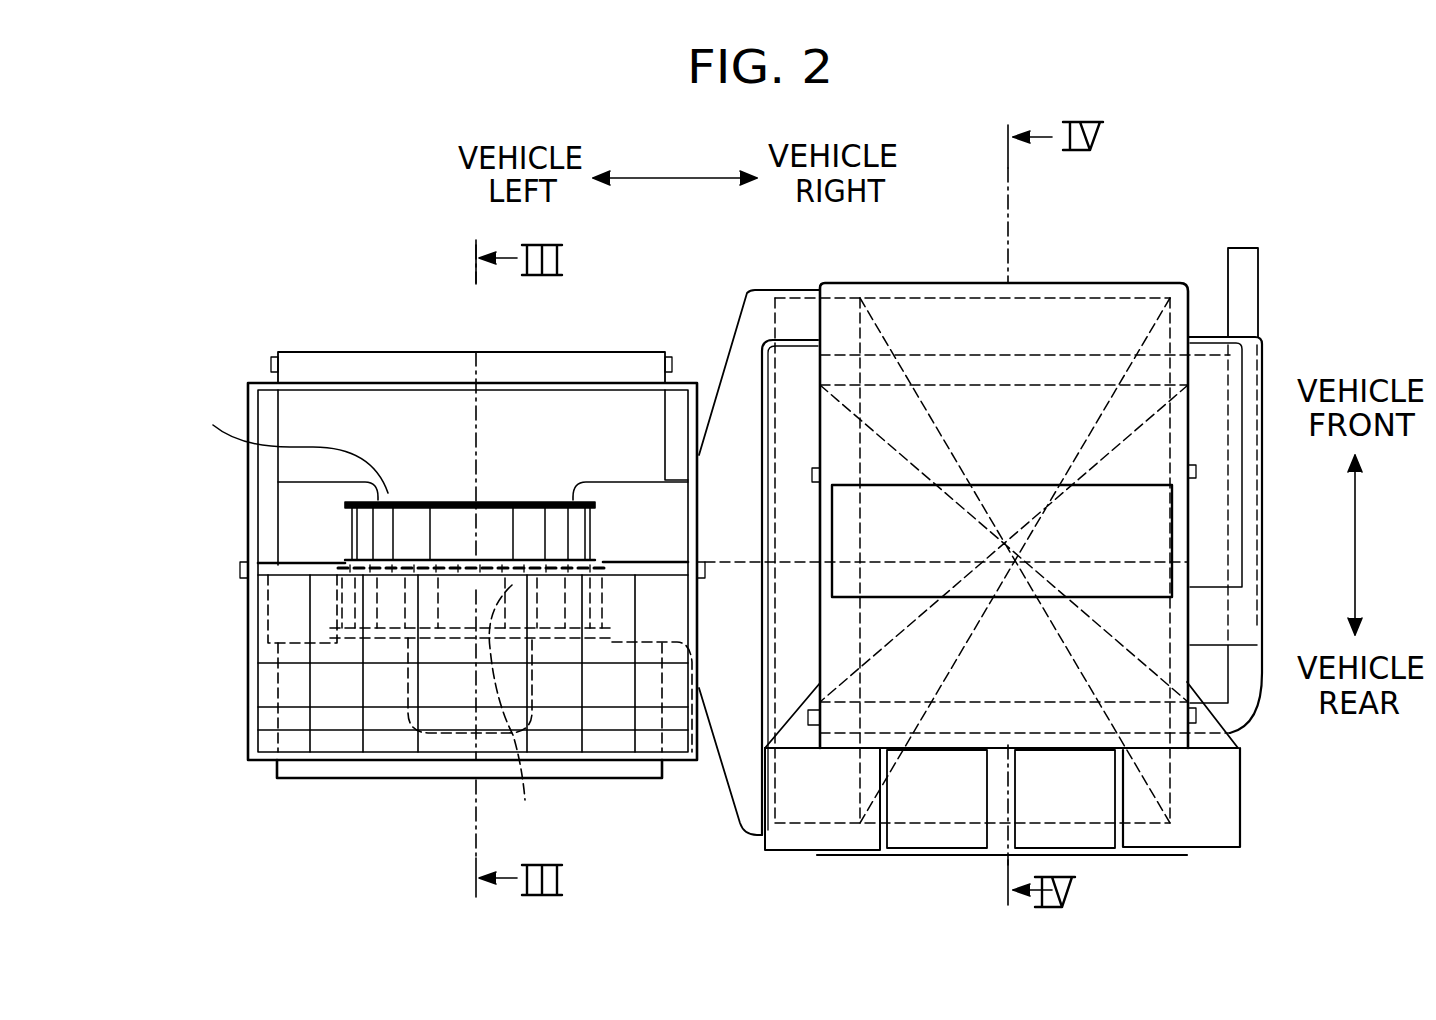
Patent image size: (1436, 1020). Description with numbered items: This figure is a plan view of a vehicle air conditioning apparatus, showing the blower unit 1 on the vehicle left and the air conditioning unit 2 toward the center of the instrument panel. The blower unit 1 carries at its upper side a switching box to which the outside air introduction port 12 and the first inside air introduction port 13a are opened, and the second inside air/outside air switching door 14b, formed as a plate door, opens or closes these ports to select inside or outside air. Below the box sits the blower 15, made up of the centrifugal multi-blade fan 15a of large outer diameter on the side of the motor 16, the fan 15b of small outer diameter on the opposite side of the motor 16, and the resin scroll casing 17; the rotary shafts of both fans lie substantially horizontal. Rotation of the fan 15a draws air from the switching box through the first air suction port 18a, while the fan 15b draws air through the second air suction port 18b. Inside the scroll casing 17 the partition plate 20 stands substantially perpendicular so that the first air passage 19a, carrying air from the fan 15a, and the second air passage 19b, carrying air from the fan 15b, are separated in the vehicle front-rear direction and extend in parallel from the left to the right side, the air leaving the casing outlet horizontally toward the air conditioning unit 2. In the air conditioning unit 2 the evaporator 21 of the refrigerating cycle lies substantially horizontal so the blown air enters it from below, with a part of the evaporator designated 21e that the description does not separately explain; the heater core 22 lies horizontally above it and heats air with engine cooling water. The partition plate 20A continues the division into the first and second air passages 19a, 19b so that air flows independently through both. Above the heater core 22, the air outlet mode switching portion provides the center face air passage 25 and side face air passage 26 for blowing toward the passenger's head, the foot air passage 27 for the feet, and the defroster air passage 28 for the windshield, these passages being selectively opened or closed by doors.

The blower unit 1 is at (243, 408).
The air conditioning unit 2 is at (906, 275).
The outside air introduction port 12 is at (430, 445).
The first inside air introduction port 13a is at (347, 690).
The second inside air/outside air switching door 14b is at (270, 362).
The blower 15 is at (340, 538).
The centrifugal multi-blade fan 15a is at (536, 706).
The centrifugal multi-blade fan 15b is at (490, 527).
The motor 16 is at (450, 716).
The scroll casing 17 is at (262, 622).
The first air suction port 18a is at (337, 640).
The second air suction port 18b is at (281, 441).
The first air passage 19a is at (655, 622).
The second air passage 19b is at (650, 508).
The partition plate 20 is at (625, 560).
The partition plate 20A is at (892, 560).
The evaporator 21 is at (1143, 293).
The oil cooler corner 21e is at (840, 297).
The heater core 22 is at (1005, 520).
The center face air passage 25 is at (955, 837).
The side face air passage 26 is at (813, 835).
The foot air passage 27 is at (795, 578).
The defroster air passage 28 is at (1023, 500).